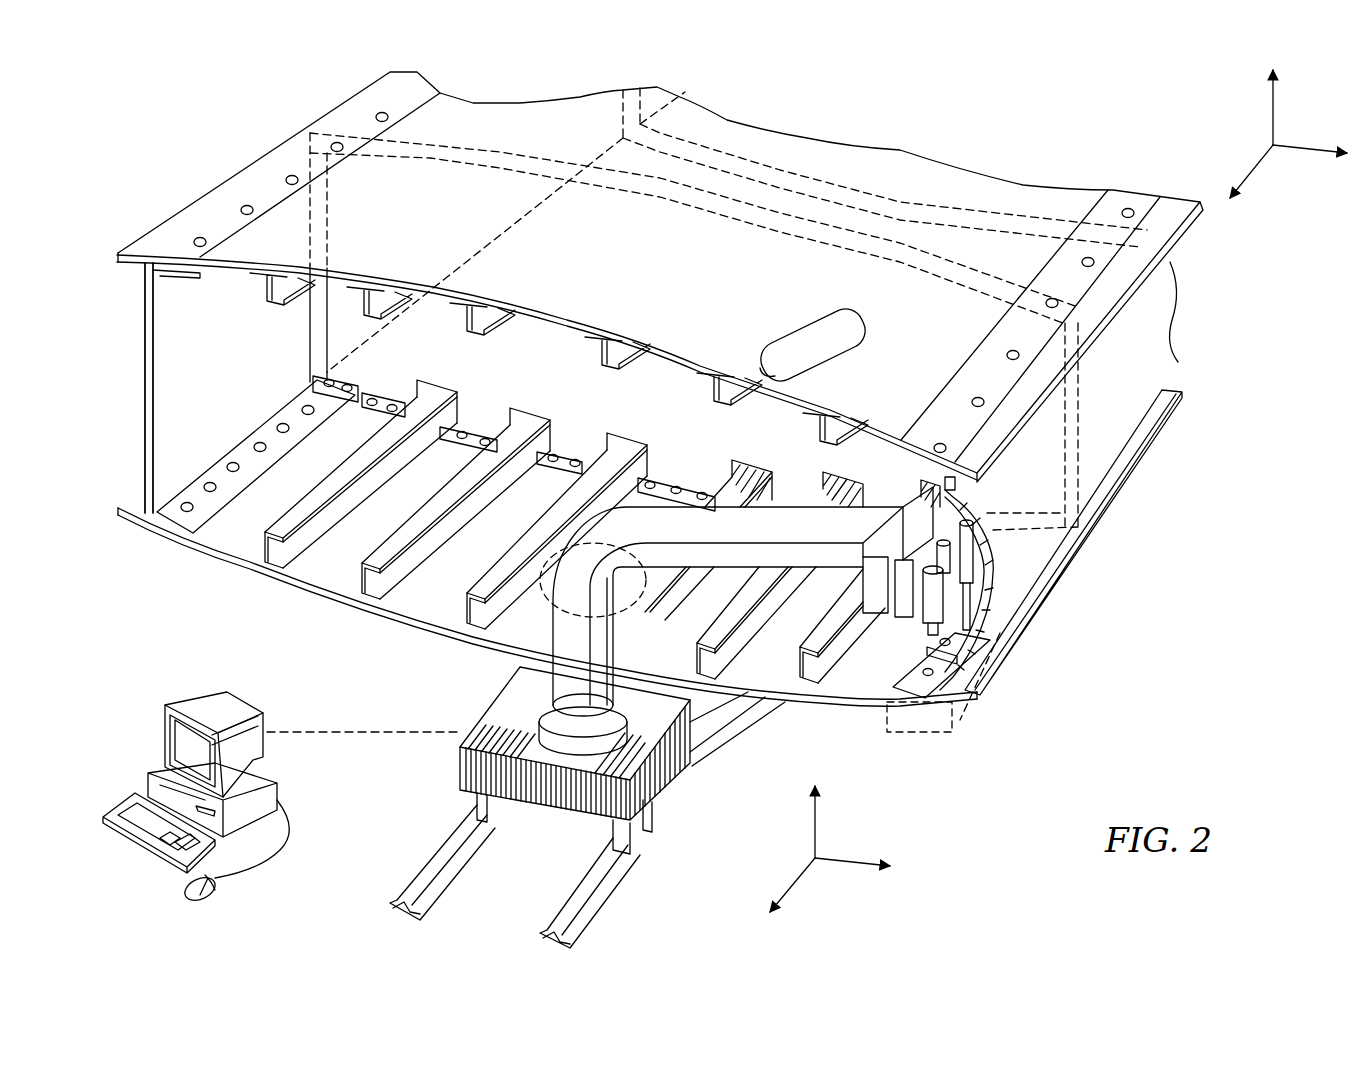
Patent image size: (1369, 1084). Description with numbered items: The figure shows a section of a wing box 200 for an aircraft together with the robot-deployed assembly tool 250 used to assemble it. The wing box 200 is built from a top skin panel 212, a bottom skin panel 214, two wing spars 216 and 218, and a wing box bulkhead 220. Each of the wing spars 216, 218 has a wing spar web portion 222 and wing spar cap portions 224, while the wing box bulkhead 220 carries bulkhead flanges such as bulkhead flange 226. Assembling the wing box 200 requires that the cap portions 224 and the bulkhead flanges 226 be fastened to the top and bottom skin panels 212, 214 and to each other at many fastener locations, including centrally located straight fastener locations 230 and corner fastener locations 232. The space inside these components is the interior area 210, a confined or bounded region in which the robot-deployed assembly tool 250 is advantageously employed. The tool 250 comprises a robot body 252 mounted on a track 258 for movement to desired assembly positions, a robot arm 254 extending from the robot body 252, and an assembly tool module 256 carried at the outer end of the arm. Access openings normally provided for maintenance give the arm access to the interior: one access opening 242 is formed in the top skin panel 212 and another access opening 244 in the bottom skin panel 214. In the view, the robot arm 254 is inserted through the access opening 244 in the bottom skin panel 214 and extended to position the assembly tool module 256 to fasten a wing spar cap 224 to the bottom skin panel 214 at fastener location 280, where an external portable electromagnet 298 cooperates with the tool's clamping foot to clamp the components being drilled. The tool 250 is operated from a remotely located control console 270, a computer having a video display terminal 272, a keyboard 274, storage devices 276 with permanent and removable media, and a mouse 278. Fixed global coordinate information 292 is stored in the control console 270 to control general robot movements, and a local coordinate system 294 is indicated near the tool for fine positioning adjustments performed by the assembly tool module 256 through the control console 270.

The wing box 200 is at (975, 110).
The interior area 210 is at (248, 522).
The top skin panel 212 is at (805, 148).
The bottom skin panel 214 is at (338, 568).
The wing spar 216 is at (142, 362).
The wing spar 218 is at (1178, 333).
The wing box bulkhead 220 is at (320, 222).
The wing spar web portion 222 is at (163, 392).
The wing spar cap portion 224 is at (177, 284).
The bulkhead flange 226 is at (385, 404).
The straight fastener location 230 is at (187, 503).
The corner fastener location 232 is at (200, 238).
The access opening 242 is at (850, 318).
The access opening 244 is at (659, 689).
The robot-deployed assembly tool 250 is at (565, 820).
The robot body 252 is at (458, 765).
The robot arm 254 is at (690, 518).
The assembly tool module 256 is at (860, 590).
The track 258 is at (420, 872).
The control console 270 is at (277, 773).
The video display terminal 272 is at (175, 738).
The keyboard 274 is at (140, 843).
The storage devices 276 is at (227, 808).
The mouse 278 is at (212, 893).
The fastener location 280 is at (1025, 660).
The global coordinates 292 is at (1230, 110).
The local coordinate system 294 is at (905, 818).
The portable electromagnet 298 is at (962, 705).